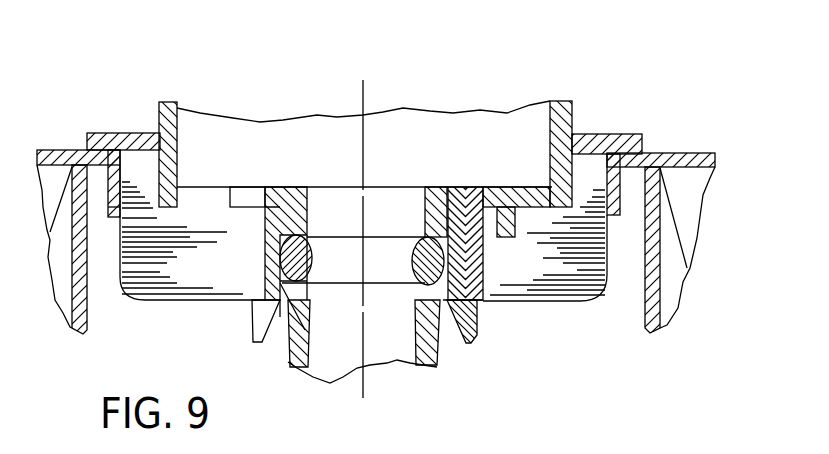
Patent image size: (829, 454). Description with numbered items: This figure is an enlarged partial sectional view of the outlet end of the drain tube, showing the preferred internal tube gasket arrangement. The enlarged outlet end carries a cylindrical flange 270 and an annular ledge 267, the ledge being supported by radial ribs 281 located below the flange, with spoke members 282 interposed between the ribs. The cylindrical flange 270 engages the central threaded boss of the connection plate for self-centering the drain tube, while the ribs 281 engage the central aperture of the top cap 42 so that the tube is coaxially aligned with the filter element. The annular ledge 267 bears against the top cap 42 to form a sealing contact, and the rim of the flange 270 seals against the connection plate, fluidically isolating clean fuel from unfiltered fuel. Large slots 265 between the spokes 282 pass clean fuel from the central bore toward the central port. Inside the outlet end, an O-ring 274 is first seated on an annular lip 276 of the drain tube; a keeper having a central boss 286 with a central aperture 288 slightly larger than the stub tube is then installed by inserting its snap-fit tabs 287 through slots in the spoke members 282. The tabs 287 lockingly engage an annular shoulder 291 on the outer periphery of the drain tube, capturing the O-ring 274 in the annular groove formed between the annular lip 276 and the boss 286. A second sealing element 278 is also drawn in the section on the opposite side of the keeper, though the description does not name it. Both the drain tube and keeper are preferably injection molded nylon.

The top cap 42 is at (687, 155).
The large slots 265 is at (210, 197).
The annular ledge 267 is at (620, 136).
The cylindrical flange 270 is at (575, 113).
The O-ring 274 is at (313, 268).
The annular lip 276 is at (312, 263).
The O-ring seal 278 is at (483, 195).
The radial ribs 281 is at (603, 275).
The spoke members 282 is at (538, 187).
The central boss 286 is at (433, 187).
The snap-fit tabs 287 is at (482, 257).
The central aperture 288 is at (400, 190).
The annular shoulder 291 is at (478, 332).